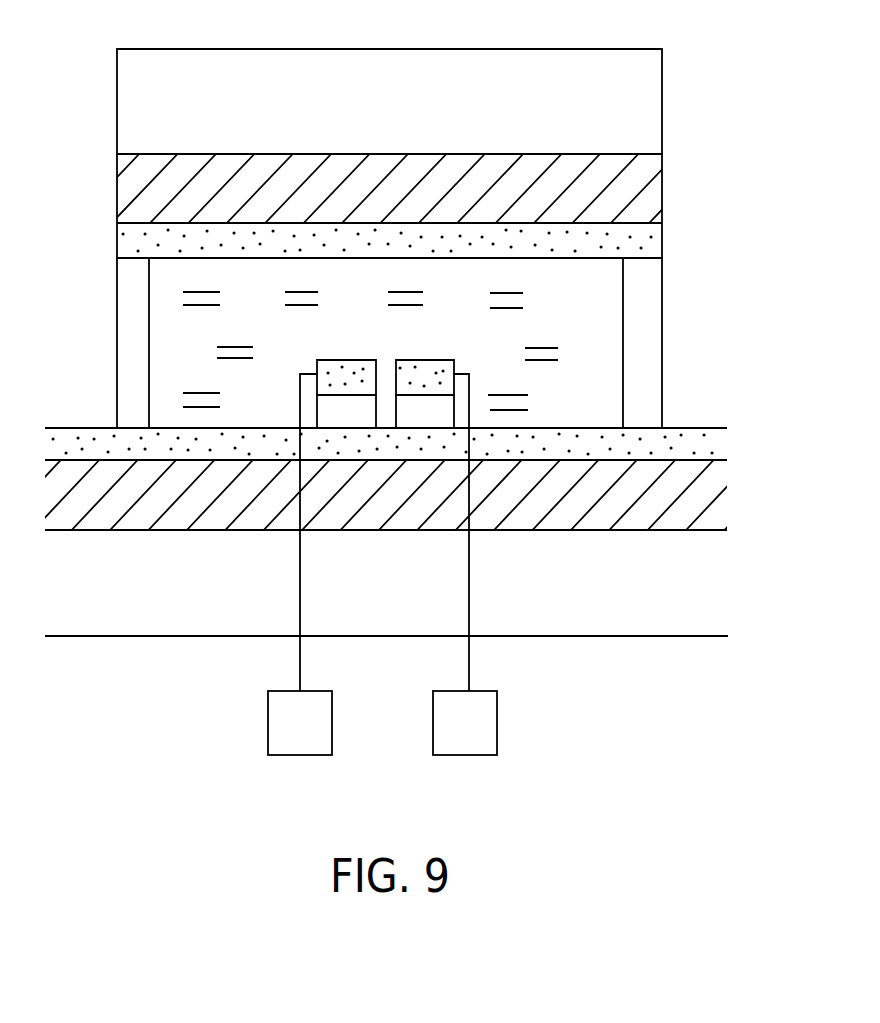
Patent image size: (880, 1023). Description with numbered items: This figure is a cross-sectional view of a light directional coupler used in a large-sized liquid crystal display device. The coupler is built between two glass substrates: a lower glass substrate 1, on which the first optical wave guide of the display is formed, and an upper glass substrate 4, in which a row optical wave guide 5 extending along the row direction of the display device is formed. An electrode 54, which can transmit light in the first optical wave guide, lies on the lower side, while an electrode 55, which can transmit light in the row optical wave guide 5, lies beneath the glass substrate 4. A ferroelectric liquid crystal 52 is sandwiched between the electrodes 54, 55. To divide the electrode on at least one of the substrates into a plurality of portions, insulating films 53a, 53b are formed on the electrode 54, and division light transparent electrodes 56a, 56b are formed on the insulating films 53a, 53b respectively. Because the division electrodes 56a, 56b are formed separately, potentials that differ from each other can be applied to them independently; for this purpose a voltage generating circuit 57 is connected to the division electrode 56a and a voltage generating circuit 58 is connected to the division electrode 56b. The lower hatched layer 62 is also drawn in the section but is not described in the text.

The glass substrate 1 is at (694, 625).
The glass substrate 4 is at (542, 62).
The row optical wave guide 5 is at (655, 188).
The ferroelectric liquid crystal 52 is at (613, 346).
The insulating film 53a is at (333, 412).
The insulating film 53b is at (448, 409).
The electrode 54 is at (79, 426).
The electrode 55 is at (124, 243).
The division light transparent electrode 56a is at (329, 370).
The division light transparent electrode 56b is at (437, 362).
The voltage generating circuit 57 is at (317, 742).
The voltage generating circuit 58 is at (470, 747).
The lower substrate 62 is at (718, 507).